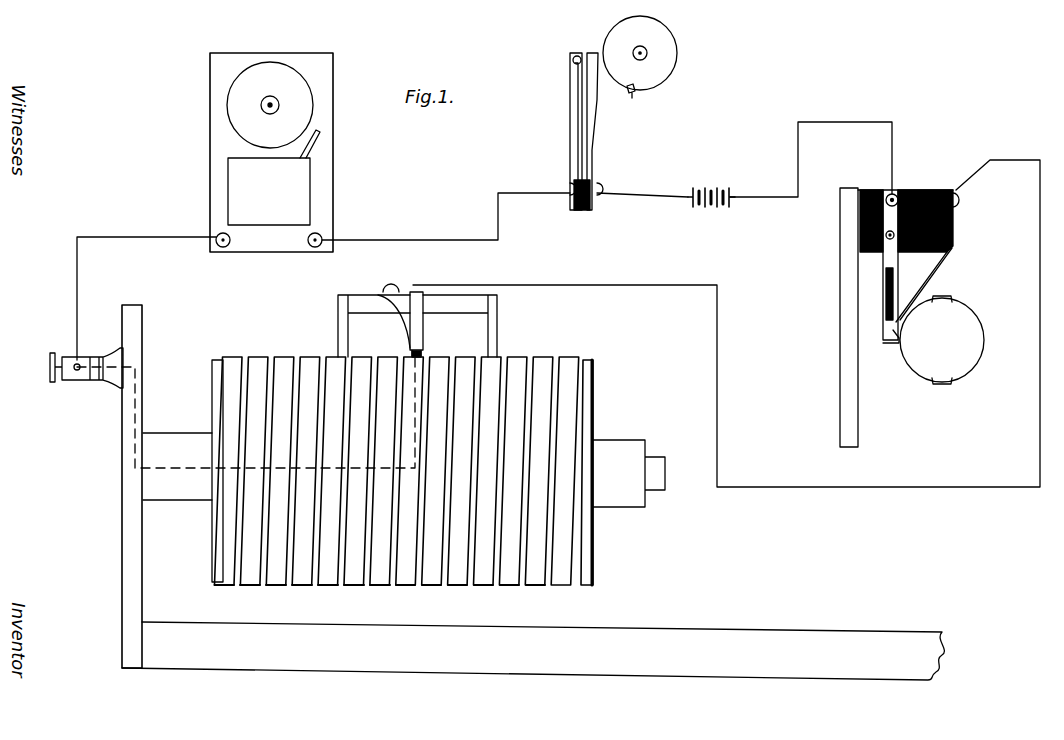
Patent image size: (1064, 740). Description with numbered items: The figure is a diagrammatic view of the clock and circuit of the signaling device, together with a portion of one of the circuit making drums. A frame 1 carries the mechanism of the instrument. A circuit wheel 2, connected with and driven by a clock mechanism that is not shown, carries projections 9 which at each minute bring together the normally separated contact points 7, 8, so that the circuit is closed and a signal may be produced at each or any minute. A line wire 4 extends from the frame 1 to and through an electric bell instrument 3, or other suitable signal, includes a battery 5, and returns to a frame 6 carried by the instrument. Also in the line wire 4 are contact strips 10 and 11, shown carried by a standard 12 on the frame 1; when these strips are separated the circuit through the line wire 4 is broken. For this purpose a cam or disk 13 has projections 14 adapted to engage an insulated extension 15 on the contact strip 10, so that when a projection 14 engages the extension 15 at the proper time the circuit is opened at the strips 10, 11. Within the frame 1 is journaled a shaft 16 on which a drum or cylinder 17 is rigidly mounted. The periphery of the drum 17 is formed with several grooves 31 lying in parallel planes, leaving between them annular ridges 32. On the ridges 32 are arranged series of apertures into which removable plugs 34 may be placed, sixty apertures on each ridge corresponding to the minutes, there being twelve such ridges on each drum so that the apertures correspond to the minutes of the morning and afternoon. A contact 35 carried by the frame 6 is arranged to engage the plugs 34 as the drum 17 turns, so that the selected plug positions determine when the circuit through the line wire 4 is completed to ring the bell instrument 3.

The frame 1 is at (533, 492).
The circuit wheel 2 is at (670, 74).
The electric bell instrument 3 is at (333, 158).
The line wire 4 is at (83, 296).
The battery 5 is at (711, 183).
The frame 6 is at (387, 314).
The contact point 7 is at (569, 143).
The contact point 8 is at (593, 140).
The projections 9 is at (637, 99).
The contact strip 10 is at (893, 270).
The contact strip 11 is at (933, 270).
The standard 12 is at (840, 333).
The cam or disk 13 is at (942, 340).
The projections 14 is at (944, 297).
The insulated extension 15 is at (892, 348).
The shaft 16 is at (657, 495).
The drum or cylinder 17 is at (570, 546).
The grooves 31 is at (563, 358).
The annular ridges 32 is at (575, 416).
The removable plugs 34 is at (422, 352).
The contact 35 is at (388, 321).